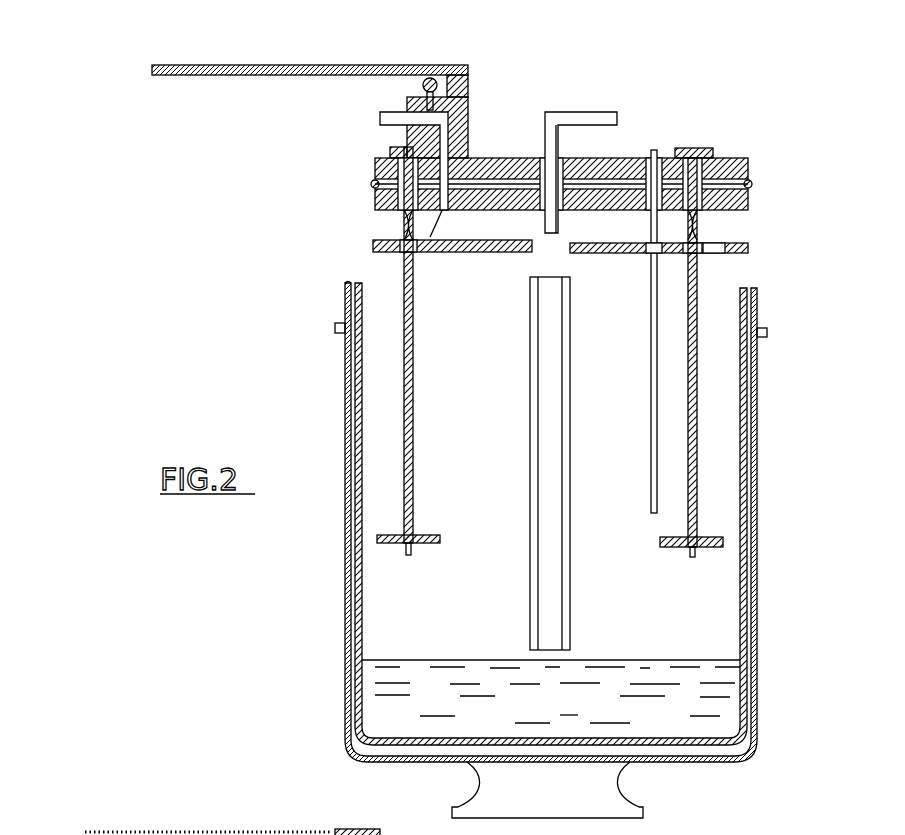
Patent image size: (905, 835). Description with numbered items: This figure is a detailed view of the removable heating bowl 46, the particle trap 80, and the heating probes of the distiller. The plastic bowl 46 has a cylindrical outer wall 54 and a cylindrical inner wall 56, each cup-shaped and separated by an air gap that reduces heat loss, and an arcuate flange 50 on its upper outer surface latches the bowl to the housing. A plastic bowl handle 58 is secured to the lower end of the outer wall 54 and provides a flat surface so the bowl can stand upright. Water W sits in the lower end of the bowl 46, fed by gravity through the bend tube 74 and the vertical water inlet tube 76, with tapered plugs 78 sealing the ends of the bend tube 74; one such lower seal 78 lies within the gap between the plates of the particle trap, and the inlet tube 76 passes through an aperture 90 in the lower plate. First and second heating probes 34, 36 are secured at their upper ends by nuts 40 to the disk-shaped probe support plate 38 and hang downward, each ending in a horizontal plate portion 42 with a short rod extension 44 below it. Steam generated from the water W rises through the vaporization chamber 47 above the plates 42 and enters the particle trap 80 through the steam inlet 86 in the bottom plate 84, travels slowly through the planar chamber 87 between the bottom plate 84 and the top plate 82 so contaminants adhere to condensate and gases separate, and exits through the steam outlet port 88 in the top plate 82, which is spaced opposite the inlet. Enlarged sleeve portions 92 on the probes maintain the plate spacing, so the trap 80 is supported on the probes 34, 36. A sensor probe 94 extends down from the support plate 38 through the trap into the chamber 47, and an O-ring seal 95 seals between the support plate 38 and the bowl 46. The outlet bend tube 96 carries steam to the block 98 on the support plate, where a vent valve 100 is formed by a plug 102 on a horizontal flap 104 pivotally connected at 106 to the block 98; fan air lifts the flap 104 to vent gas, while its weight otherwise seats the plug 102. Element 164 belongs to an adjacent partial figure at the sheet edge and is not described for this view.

The first heating probe 34 is at (413, 482).
The second heating probe 36 is at (697, 420).
The probe support plate 38 is at (656, 152).
The nut 40 is at (700, 148).
The plate portion 42 is at (430, 535).
The rod extension 44 is at (412, 556).
The heating bowl 46 is at (757, 620).
The vaporization chamber 47 is at (482, 374).
The arcuate flange 50 is at (765, 336).
The outer wall 54 is at (345, 622).
The inner wall 56 is at (355, 600).
The bowl handle 58 is at (470, 790).
The bend tube 74 is at (558, 157).
The water inlet tube 76 is at (568, 475).
The tapered plug 78 is at (608, 112).
The particle trap 80 is at (768, 128).
The top plate 82 is at (375, 200).
The bottom plate 84 is at (645, 263).
The steam inlet 86 is at (735, 253).
The planar chamber 87 is at (478, 243).
The steam outlet port 88 is at (410, 246).
The aperture 90 is at (578, 255).
The enlarged sleeve portion 92 is at (700, 228).
The sensor probe 94 is at (651, 360).
The O-ring seal 95 is at (752, 184).
The outlet bend tube 96 is at (452, 150).
The block 98 is at (462, 128).
The vent valve 100 is at (378, 52).
The plug 102 is at (423, 88).
The flap 104 is at (200, 76).
The pivotal connection 106 is at (470, 90).
The adjacent figure element 164 is at (232, 832).
The water W is at (551, 691).